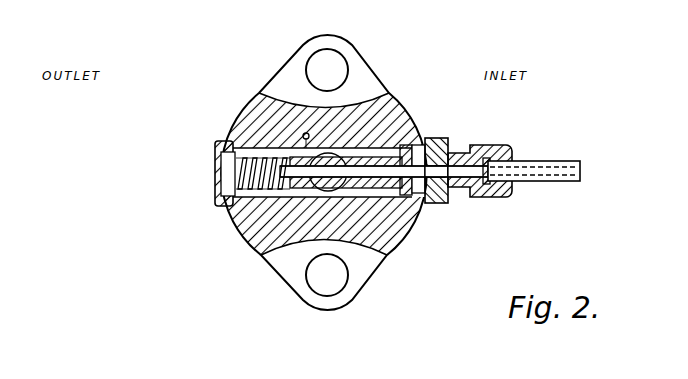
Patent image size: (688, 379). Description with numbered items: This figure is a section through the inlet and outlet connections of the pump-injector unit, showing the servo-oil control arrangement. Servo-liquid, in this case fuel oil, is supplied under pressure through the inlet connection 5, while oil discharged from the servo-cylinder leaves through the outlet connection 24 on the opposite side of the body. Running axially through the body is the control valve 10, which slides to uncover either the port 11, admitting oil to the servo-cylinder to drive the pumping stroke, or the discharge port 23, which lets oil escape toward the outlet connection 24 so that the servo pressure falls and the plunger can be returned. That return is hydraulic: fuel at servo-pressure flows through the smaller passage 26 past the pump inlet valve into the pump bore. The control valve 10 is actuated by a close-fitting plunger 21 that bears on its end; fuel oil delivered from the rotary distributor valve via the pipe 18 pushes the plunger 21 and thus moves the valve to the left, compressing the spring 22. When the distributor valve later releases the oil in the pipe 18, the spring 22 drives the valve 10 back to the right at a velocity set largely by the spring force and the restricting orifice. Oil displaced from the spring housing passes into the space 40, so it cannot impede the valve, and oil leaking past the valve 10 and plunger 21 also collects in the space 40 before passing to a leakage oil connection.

The inlet connection 5 is at (412, 94).
The control valve 10 is at (417, 232).
The port 11 is at (377, 200).
The pipe 18 is at (550, 163).
The plunger 21 is at (453, 146).
The spring 22 is at (227, 176).
The discharge port 23 is at (232, 219).
The outlet connection 24 is at (237, 110).
The smaller passage 26 is at (304, 133).
The space 40 is at (433, 130).